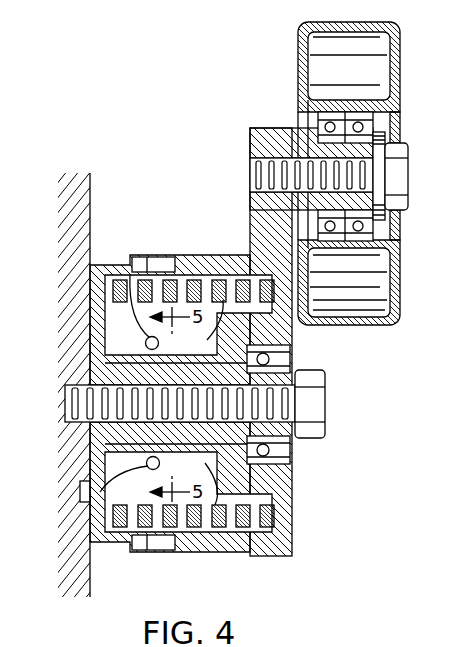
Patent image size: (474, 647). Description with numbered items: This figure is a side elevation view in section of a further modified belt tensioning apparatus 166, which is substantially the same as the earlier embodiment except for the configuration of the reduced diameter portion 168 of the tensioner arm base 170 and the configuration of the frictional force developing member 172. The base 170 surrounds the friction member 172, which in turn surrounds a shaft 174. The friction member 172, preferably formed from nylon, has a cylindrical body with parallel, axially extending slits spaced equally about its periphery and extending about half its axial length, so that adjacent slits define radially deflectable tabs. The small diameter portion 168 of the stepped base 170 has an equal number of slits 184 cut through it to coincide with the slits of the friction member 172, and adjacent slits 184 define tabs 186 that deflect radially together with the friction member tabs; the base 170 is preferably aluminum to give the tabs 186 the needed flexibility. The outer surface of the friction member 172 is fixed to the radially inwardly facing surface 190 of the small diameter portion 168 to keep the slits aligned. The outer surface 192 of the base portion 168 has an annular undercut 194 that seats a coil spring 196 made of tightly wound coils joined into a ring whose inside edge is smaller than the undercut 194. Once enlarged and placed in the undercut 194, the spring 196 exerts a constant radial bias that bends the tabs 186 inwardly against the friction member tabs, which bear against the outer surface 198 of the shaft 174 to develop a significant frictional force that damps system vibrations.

The belt tensioning apparatus 166 is at (414, 76).
The reduced diameter portion 168 is at (237, 257).
The tensioner arm base 170 is at (283, 332).
The frictional force developing member 172 is at (150, 440).
The shaft 174 is at (118, 378).
The slits 184 is at (423, 155).
The tabs 186 is at (429, 176).
The radially inwardly facing surface 190 is at (100, 427).
The outer surface 192 is at (212, 465).
The annular undercut 194 is at (100, 492).
The coil spring 196 is at (133, 262).
The outer surface 198 is at (122, 357).